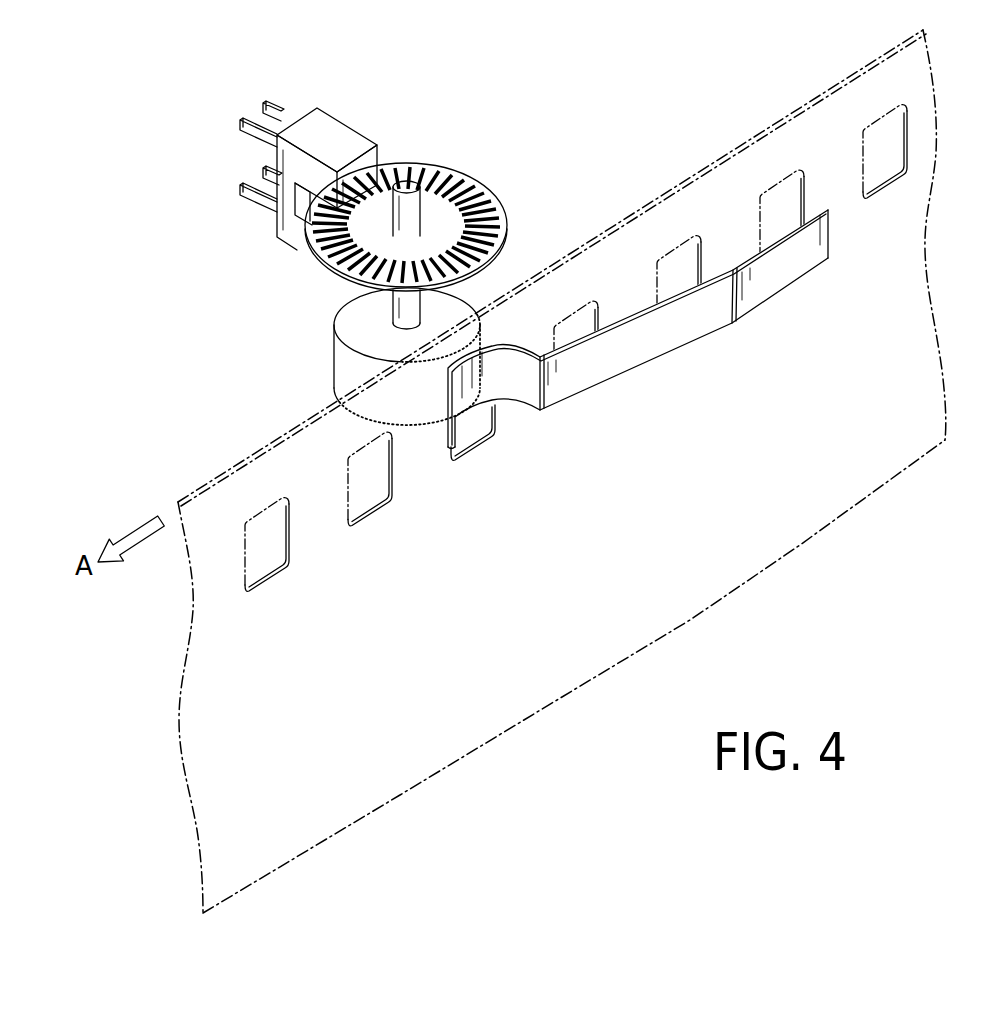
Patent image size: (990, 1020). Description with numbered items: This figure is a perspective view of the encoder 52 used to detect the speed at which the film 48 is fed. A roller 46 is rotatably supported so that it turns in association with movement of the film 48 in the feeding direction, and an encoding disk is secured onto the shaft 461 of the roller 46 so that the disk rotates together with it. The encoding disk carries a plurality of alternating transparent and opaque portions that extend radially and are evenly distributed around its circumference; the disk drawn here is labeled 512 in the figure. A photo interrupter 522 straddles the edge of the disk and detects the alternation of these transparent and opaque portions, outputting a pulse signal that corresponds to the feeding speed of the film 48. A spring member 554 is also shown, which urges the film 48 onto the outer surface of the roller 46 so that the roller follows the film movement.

The roller 46 is at (352, 332).
The shaft 461 is at (430, 196).
The film 48 is at (800, 108).
The encoder 52 is at (335, 150).
The encoder disc 512 is at (505, 213).
The photo interrupter 522 is at (317, 120).
The spring member 554 is at (607, 372).